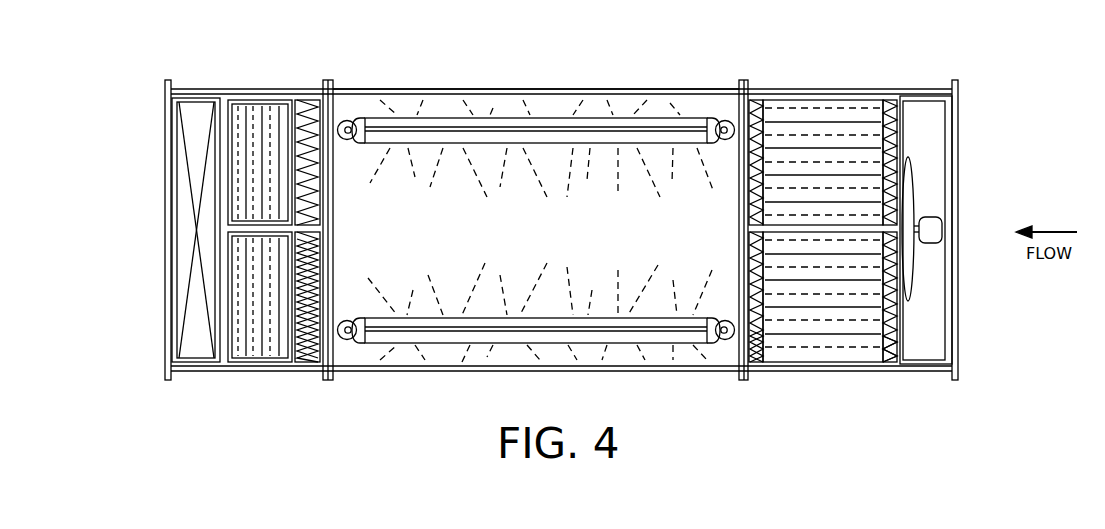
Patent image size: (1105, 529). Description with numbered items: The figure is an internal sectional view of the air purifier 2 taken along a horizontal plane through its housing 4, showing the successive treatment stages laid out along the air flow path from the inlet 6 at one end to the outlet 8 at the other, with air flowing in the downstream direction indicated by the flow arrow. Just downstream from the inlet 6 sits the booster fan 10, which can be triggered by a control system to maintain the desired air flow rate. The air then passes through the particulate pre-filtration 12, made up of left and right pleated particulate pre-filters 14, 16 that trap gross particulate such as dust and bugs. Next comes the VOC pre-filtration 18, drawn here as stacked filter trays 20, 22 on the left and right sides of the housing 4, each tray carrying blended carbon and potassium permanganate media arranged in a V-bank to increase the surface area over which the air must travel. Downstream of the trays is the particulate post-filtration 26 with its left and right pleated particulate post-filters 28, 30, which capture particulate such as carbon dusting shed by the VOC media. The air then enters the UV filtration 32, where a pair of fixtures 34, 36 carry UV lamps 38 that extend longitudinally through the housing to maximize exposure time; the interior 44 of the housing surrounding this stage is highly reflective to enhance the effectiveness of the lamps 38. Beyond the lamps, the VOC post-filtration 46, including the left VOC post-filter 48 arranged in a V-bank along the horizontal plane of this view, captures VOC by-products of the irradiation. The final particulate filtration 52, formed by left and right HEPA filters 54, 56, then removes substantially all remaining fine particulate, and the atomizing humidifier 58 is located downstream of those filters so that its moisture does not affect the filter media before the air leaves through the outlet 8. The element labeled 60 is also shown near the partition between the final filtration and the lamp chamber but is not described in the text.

The air purifier 2 is at (663, 32).
The housing 4 is at (403, 90).
The inlet 6 is at (958, 131).
The outlet 8 is at (168, 261).
The booster fan 10 is at (909, 270).
The particulate pre-filtration 12 is at (888, 112).
The left pleated particulate pre-filter 14 is at (886, 372).
The right pleated particulate pre-filter 16 is at (887, 98).
The VOC pre-filtration 18 is at (840, 127).
The filter trays 20 is at (822, 340).
The filter trays 22 is at (808, 123).
The particulate post-filtration 26 is at (752, 366).
The left pleated particulate post-filter 28 is at (749, 373).
The right pleated particulate post-filter 30 is at (757, 100).
The UV filtration 32 is at (555, 205).
The fixture 34 is at (712, 340).
The fixture 36 is at (722, 121).
The UV lamps 38 is at (510, 132).
The interior 44 is at (552, 364).
The VOC post-filtration 46 is at (313, 117).
The left VOC post-filter 48 is at (300, 347).
The final particulate filtration 52 is at (263, 125).
The left HEPA filter 54 is at (247, 320).
The right HEPA filter 56 is at (247, 117).
The atomizing humidifier 58 is at (195, 141).
The partition 60 is at (300, 107).